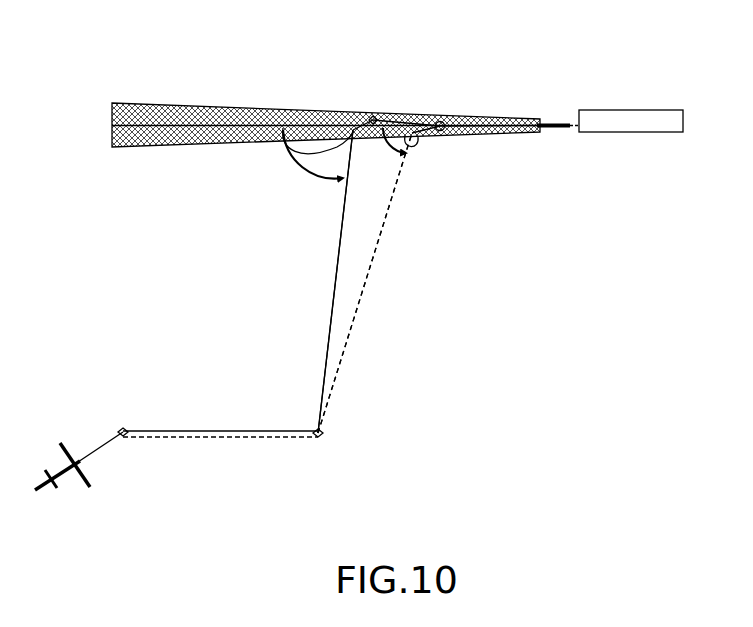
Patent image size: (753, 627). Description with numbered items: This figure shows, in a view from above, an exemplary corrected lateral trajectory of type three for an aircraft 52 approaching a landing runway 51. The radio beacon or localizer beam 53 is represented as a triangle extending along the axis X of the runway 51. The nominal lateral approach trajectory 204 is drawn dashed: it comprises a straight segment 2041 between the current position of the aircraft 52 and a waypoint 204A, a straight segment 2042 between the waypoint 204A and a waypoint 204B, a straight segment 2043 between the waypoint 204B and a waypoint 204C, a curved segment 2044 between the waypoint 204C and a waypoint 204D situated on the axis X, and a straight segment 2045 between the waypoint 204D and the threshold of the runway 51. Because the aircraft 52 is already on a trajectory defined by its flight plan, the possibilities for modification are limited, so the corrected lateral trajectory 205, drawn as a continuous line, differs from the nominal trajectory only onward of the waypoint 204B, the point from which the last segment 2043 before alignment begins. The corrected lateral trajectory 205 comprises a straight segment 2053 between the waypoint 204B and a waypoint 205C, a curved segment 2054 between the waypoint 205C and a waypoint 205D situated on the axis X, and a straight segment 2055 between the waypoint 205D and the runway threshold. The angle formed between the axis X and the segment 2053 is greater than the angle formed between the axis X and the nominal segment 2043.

The landing runway 51 is at (626, 131).
The aircraft 52 is at (63, 492).
The radio beacon beam 53 is at (148, 103).
The axis of the landing runway X is at (210, 127).
The nominal lateral approach trajectory 204 is at (373, 268).
The waypoint 204A is at (120, 425).
The waypoint 204B is at (325, 436).
The waypoint 204C is at (411, 140).
The waypoint 204D is at (447, 120).
The straight segment 2041 is at (105, 455).
The straight segment 2042 is at (223, 438).
The straight segment 2043 is at (355, 330).
The path segment 2044 is at (427, 135).
The straight segment 2045 is at (533, 133).
The corrected lateral trajectory 205 is at (335, 275).
The waypoint 205C is at (287, 152).
The waypoint 205D is at (373, 112).
The straight segment 2053 is at (322, 368).
The curved segment 2054 is at (327, 120).
The straight segment 2055 is at (413, 117).